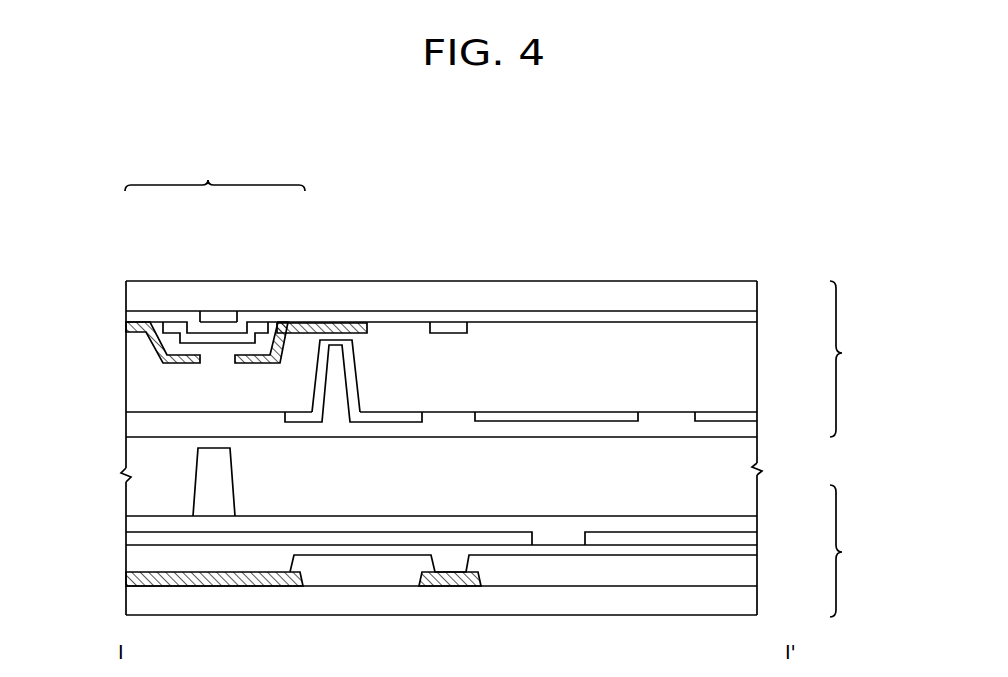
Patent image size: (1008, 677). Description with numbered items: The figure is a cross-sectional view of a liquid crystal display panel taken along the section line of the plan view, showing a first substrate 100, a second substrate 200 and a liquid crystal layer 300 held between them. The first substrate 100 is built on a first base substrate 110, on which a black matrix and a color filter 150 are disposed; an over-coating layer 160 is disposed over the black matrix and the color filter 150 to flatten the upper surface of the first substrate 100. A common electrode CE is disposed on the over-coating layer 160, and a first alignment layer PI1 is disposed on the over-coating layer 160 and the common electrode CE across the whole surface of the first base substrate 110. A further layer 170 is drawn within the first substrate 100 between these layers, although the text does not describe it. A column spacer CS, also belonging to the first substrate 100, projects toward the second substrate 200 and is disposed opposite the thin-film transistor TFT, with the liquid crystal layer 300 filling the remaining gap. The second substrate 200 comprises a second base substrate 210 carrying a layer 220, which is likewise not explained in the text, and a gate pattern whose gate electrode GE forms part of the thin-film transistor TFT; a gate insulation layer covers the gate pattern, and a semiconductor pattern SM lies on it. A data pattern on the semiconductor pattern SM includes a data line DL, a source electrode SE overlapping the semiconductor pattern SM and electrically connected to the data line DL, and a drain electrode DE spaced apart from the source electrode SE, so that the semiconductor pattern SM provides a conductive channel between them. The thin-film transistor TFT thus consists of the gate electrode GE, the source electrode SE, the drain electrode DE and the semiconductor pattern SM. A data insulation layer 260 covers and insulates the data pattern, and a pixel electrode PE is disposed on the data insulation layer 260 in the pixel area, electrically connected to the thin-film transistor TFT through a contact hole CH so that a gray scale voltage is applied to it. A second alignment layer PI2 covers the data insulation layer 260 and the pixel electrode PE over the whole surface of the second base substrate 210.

The first substrate 100 is at (503, 551).
The first base substrate 110 is at (757, 606).
The color filter 150 is at (468, 586).
The over-coating layer 160 is at (757, 574).
The passivation layer 170 is at (757, 548).
The common electrode CE is at (757, 535).
The first alignment layer PI1 is at (757, 516).
The column spacer CS is at (207, 495).
The liquid crystal layer 300 is at (757, 462).
The second substrate 200 is at (503, 359).
The second base substrate 210 is at (757, 291).
The light blocking / color layer 220 is at (757, 317).
The data insulation layer 260 is at (757, 364).
The second alignment layer PI2 is at (757, 427).
The thin-film transistor TFT is at (215, 259).
The source electrode SE is at (143, 324).
The semiconductor pattern SM is at (170, 333).
The gate electrode GE is at (220, 311).
The drain electrode DE is at (283, 330).
The pixel electrode PE is at (333, 323).
The data line DL is at (448, 322).
The contact hole CH is at (339, 409).